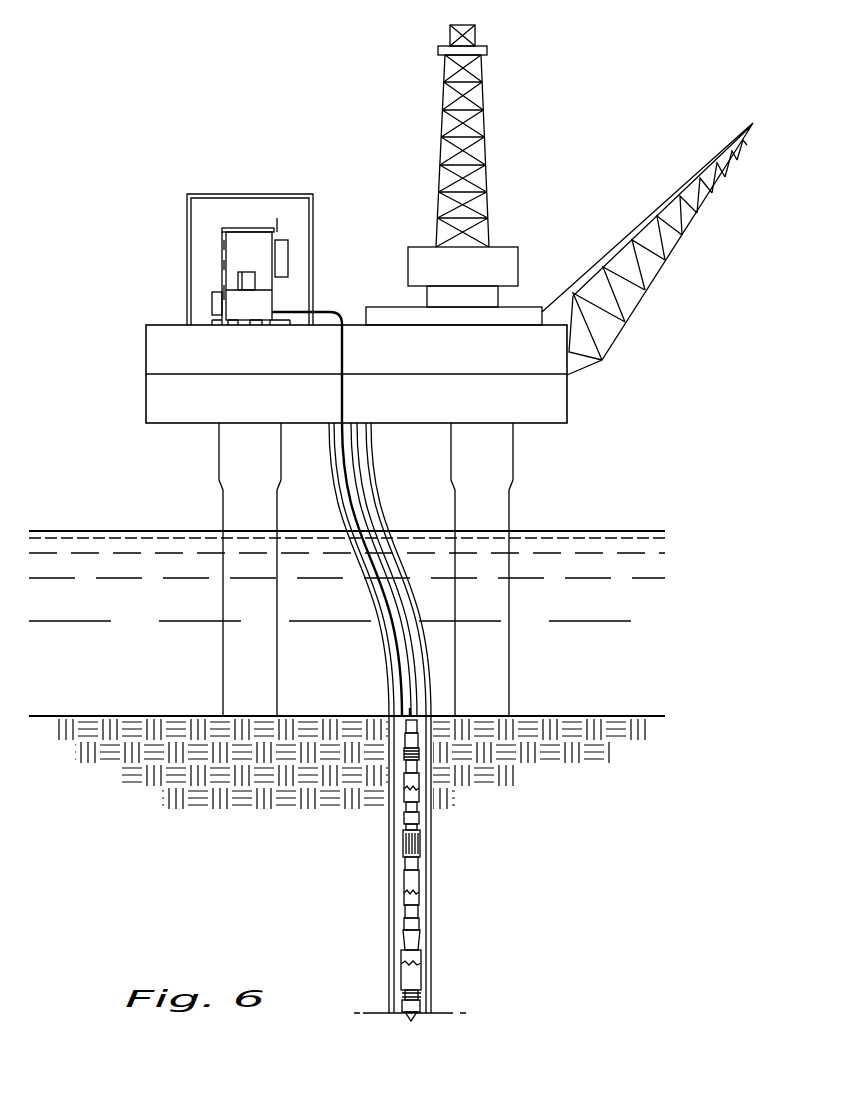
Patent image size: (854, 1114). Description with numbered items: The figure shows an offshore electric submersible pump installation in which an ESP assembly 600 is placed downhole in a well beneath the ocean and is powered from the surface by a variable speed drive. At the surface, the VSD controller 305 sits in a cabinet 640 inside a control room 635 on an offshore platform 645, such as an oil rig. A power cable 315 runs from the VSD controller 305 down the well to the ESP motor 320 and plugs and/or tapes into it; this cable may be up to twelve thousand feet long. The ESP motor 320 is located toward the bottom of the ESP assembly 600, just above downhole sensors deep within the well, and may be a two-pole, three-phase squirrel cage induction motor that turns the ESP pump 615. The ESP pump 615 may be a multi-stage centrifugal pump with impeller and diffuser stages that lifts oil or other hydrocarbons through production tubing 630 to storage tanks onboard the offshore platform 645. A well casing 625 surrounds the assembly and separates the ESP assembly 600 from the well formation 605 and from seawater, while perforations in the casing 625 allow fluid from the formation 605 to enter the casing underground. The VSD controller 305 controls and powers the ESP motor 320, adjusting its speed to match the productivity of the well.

The VSD controller 305 is at (237, 283).
The power cable 315 is at (388, 648).
The ESP motor 320 is at (415, 983).
The ESP assembly 600 is at (457, 870).
The well formation 605 is at (492, 931).
The ESP pump 615 is at (416, 800).
The well casing 625 is at (389, 920).
The production tubing 630 is at (410, 680).
The control room 635 is at (256, 193).
The cabinet 640 is at (222, 234).
The offshore platform 645 is at (146, 352).